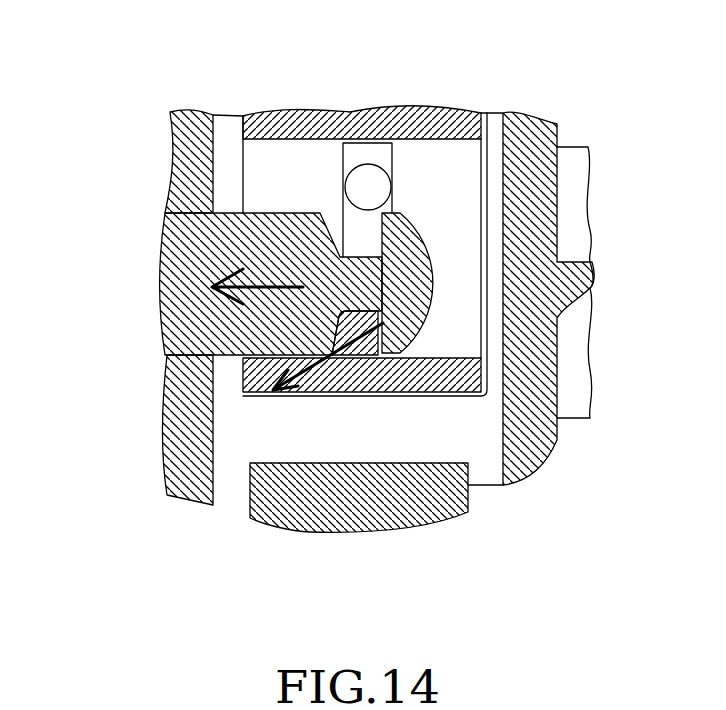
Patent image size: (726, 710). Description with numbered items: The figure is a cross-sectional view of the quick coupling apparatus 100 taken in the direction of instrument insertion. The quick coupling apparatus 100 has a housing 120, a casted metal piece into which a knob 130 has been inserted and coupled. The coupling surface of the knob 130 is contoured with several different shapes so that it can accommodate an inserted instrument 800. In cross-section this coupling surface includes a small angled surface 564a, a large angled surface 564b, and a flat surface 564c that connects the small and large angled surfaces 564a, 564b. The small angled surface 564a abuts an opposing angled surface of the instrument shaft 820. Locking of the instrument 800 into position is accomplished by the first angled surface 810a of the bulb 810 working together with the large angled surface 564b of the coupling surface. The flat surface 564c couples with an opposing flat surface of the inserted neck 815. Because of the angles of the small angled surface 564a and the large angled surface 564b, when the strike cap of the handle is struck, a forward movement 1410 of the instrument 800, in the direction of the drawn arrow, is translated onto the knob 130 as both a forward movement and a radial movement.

The quick coupling apparatus 100 is at (568, 86).
The housing 120 is at (167, 455).
The knob 130 is at (460, 328).
The small angled surface 564a is at (337, 313).
The large angled surface 564b is at (382, 213).
The flat surface 564c is at (358, 310).
The instrument 800 is at (166, 320).
The bulb 810 is at (421, 277).
The first angled surface 810a is at (403, 315).
The neck 815 is at (380, 357).
The instrument shaft 820 is at (245, 358).
The forward movement 1410 is at (270, 283).